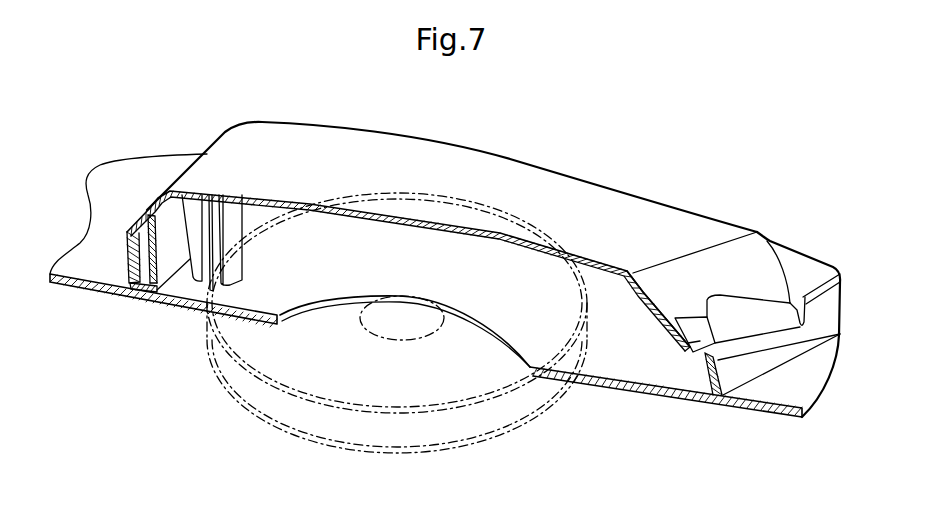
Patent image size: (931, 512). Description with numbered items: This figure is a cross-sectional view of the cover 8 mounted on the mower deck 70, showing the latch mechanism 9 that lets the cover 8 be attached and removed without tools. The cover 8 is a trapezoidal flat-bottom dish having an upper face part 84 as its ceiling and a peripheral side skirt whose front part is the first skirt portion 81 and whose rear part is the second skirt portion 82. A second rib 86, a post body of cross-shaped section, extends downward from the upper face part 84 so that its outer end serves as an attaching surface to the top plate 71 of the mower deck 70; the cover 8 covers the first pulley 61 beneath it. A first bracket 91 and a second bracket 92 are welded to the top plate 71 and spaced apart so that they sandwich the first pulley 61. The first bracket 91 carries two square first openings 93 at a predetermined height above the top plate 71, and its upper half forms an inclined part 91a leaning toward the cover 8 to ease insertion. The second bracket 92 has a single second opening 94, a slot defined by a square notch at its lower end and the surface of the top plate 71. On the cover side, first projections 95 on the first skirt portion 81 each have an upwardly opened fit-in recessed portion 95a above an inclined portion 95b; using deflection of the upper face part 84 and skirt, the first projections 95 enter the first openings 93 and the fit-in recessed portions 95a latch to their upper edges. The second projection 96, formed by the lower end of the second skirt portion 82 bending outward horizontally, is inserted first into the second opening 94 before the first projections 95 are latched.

The cover 8 is at (474, 241).
The latch mechanism 9 is at (695, 334).
The first pulley 61 is at (243, 407).
The mower deck 70 is at (84, 237).
The top plate 71 is at (537, 335).
The first skirt portion 81 is at (743, 258).
The second skirt portion 82 is at (146, 238).
The upper face part 84 is at (354, 143).
The second rib 86 is at (243, 266).
The first bracket 91 is at (745, 367).
The inclined part 91a is at (753, 323).
The second bracket 92 is at (127, 248).
The first opening 93 is at (690, 343).
The second opening 94 is at (133, 293).
The first projection 95 is at (708, 316).
The fit-in recessed portion 95a is at (693, 322).
The inclined portion 95b is at (708, 318).
The second projection 96 is at (150, 290).